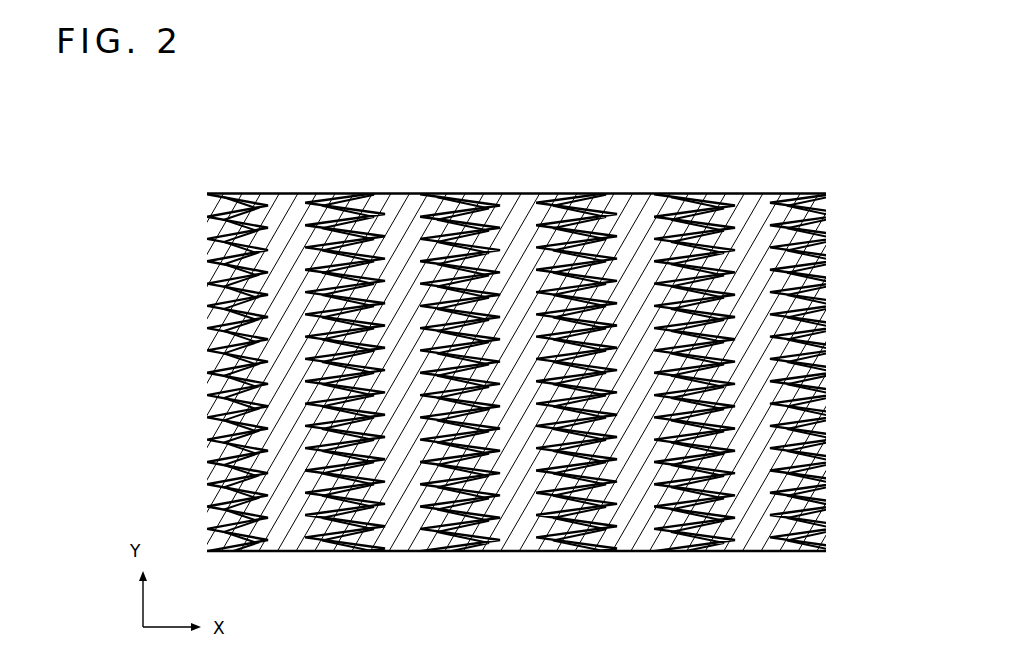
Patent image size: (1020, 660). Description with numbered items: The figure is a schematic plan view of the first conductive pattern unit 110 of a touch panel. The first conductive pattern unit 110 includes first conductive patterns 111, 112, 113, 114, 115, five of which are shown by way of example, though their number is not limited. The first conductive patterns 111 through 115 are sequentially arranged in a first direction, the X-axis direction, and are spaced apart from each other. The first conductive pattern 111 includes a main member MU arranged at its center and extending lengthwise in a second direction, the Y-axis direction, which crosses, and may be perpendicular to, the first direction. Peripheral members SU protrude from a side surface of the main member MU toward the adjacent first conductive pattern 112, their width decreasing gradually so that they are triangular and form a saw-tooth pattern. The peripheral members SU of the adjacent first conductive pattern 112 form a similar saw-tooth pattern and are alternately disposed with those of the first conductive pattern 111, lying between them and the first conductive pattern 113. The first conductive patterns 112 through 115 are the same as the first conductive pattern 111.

The first conductive pattern unit 110 is at (764, 68).
The first conductive pattern 111 is at (291, 218).
The first conductive pattern 112 is at (412, 218).
The first conductive pattern 113 is at (530, 216).
The first conductive pattern 114 is at (647, 216).
The first conductive pattern 115 is at (767, 216).